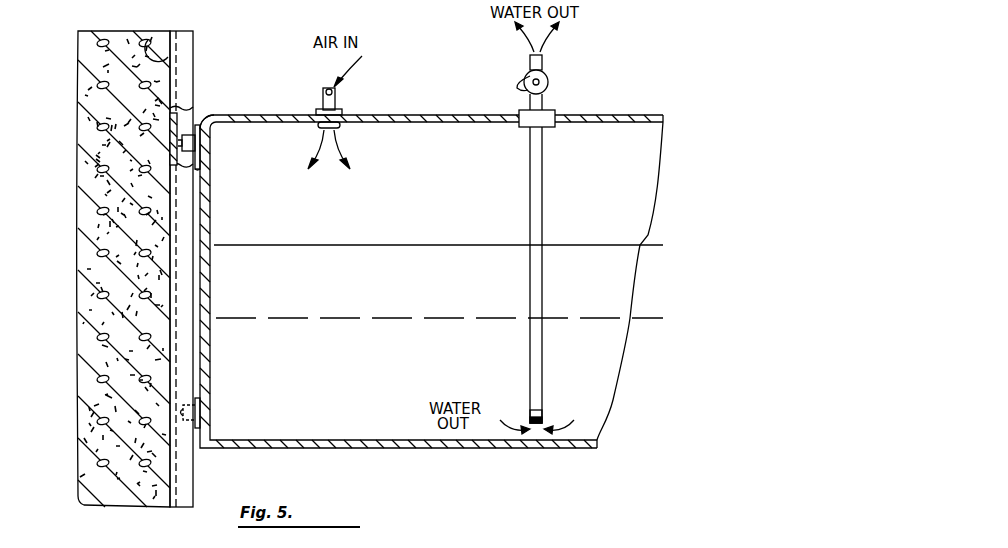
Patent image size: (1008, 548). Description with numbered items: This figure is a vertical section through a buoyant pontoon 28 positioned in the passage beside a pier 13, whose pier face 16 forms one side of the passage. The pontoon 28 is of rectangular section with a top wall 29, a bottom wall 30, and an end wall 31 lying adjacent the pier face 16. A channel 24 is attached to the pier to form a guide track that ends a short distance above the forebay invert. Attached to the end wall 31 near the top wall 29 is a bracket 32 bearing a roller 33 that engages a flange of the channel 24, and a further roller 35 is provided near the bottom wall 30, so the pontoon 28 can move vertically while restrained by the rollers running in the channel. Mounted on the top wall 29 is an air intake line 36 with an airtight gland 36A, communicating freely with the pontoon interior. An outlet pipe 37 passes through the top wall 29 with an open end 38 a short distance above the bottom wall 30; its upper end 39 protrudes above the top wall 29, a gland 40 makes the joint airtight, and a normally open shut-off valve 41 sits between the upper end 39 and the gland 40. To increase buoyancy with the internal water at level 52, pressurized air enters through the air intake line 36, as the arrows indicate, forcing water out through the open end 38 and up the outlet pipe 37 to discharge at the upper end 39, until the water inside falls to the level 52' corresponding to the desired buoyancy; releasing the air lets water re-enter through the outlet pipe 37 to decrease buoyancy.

The pier 13 is at (78, 74).
The pier face 16 is at (152, 40).
The channel 24 is at (188, 291).
The pontoon 28 is at (425, 118).
The top wall 29 is at (231, 116).
The bottom wall 30 is at (303, 448).
The end wall 31 is at (431, 281).
The bracket 32 is at (202, 168).
The roller 33 is at (197, 143).
The roller 35 is at (200, 412).
The air intake line 36 is at (322, 104).
The airtight gland 36A is at (341, 110).
The outlet pipe 37 is at (543, 226).
The open end 38 is at (532, 420).
The upper end 39 is at (546, 62).
The gland 40 is at (556, 112).
The shut-off valve 41 is at (523, 80).
The water level 52 is at (438, 229).
The water level 52' is at (439, 304).